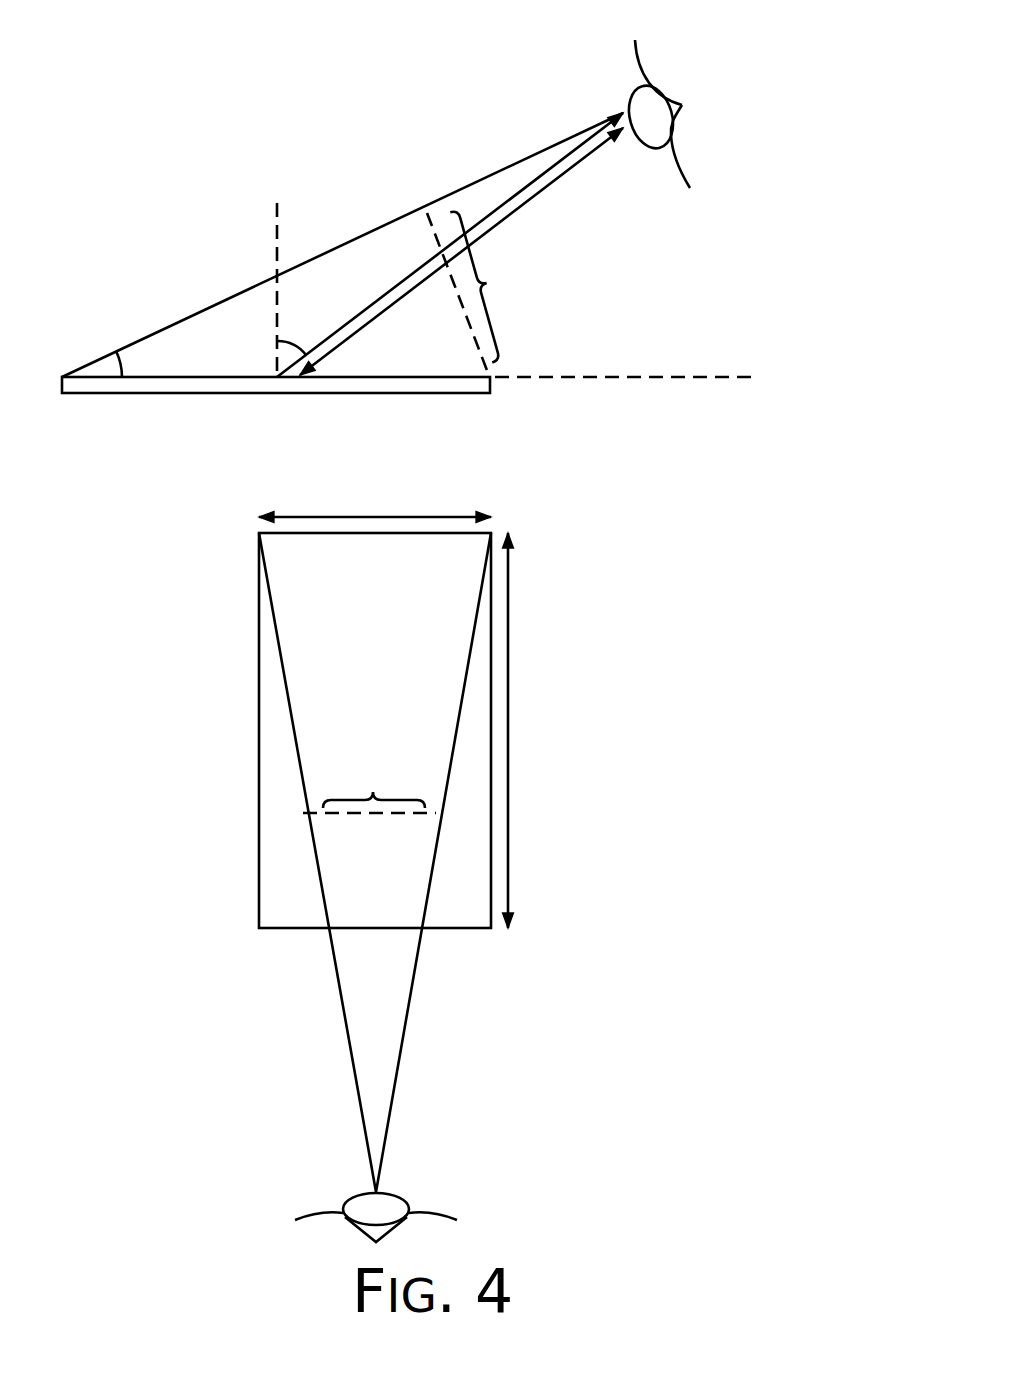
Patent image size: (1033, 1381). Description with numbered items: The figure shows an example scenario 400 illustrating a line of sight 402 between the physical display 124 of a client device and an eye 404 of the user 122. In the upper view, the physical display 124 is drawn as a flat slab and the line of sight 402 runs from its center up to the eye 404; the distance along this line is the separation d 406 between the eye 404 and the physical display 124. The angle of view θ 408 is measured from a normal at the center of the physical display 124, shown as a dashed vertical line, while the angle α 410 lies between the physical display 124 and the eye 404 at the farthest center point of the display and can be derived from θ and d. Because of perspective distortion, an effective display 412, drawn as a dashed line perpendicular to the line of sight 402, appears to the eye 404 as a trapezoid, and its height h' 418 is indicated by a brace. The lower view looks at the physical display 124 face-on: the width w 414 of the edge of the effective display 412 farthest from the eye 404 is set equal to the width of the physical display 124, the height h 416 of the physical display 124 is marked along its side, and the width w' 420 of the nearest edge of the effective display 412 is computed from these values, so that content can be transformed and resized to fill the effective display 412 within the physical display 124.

The example scenario 400 is at (757, 40).
The line of sight 402 is at (540, 170).
The eye 404 is at (665, 172).
The separation d 406 is at (570, 173).
The angle of view θ 408 is at (312, 321).
The angle α 410 is at (174, 353).
The effective display 412 is at (420, 232).
The farthest edge width w 414 is at (368, 503).
The physical display height h 416 is at (446, 862).
The effective display height h' 418 is at (521, 285).
The nearest edge width w' 420 is at (374, 743).
The user 122 is at (342, 832).
The physical display 124 is at (277, 394).